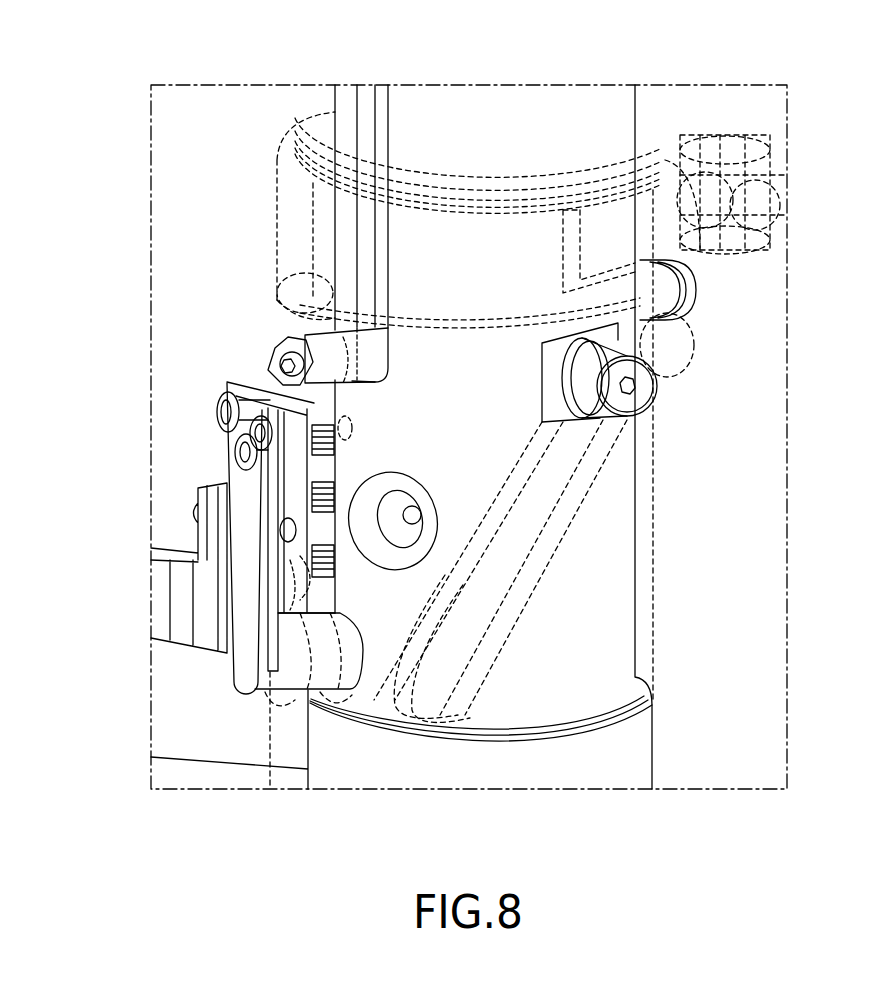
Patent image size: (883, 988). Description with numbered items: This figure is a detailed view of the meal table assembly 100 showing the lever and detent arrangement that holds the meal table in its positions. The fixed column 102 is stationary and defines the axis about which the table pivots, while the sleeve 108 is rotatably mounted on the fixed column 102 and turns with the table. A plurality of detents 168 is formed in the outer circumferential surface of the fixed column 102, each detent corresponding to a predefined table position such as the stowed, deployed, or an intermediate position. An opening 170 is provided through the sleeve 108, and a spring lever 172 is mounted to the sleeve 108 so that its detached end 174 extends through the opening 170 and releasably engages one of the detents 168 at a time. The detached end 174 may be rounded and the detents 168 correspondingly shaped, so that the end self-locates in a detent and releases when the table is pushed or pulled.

The meal table assembly 100 is at (637, 46).
The fixed column 102 is at (441, 97).
The sleeve 108 is at (285, 233).
The detents 168 is at (413, 515).
The opening 170 is at (283, 701).
The spring lever 172 is at (243, 495).
The detached end 174 is at (302, 662).